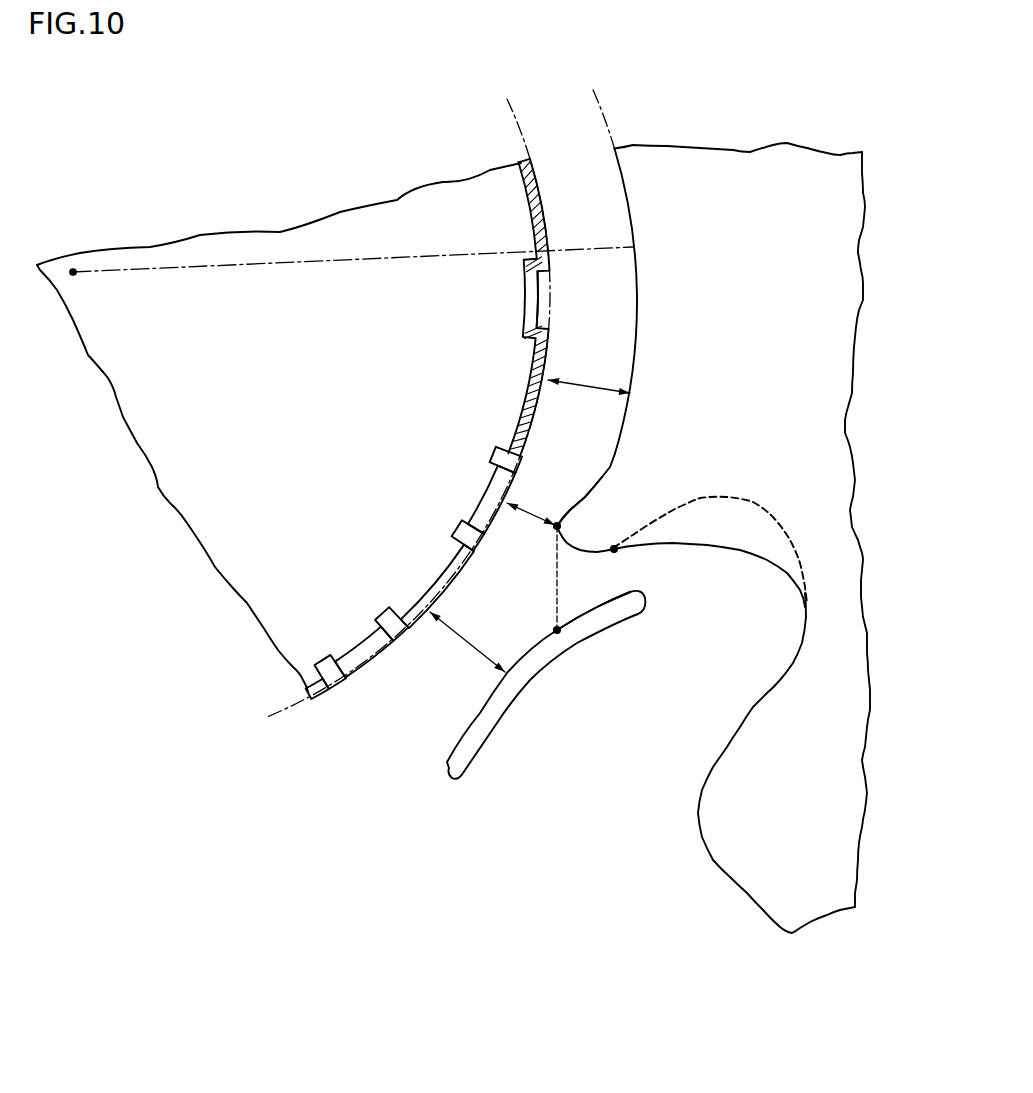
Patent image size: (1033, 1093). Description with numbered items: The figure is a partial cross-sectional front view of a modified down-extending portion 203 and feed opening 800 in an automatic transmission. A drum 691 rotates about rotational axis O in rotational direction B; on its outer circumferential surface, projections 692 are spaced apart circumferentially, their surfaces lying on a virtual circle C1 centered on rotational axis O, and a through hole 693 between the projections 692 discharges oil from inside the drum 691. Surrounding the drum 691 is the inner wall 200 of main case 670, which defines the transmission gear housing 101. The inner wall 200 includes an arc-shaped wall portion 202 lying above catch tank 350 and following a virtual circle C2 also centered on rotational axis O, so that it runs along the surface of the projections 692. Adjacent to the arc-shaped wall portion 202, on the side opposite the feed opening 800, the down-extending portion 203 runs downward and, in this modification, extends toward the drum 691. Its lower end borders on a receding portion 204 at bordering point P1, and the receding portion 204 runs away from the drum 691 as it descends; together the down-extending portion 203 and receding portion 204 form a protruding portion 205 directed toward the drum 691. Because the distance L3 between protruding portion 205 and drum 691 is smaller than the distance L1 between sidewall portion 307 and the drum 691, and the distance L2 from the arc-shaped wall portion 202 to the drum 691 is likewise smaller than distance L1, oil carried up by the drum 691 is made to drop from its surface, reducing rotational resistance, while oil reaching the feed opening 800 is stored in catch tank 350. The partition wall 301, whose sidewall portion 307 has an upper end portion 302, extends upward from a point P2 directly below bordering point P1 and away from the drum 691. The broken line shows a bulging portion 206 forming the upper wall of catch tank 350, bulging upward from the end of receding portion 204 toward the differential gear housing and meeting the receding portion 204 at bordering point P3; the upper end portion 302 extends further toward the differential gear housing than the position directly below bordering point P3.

The transmission gear housing 101 is at (309, 402).
The drum 691 is at (463, 195).
The projections 692 is at (547, 202).
The through hole 693 is at (527, 300).
The main case 670 is at (668, 512).
The arc-shaped wall portion 202 is at (660, 338).
The inner wall 200 is at (633, 420).
The down-extending portion 203 is at (578, 493).
The receding portion 204 is at (582, 550).
The protruding portion 205 is at (583, 460).
The bulging portion 206 is at (680, 515).
The feed opening 800 is at (552, 578).
The upper end portion 302 is at (614, 614).
The sidewall portion 307 is at (546, 685).
The partition wall 301 is at (497, 703).
The catch tank 350 is at (550, 731).
The rotational axis O is at (74, 270).
The virtual circle C1 is at (522, 113).
The virtual circle C2 is at (613, 113).
The distance L1 is at (482, 647).
The distance L2 is at (592, 383).
The distance L3 is at (538, 512).
The bordering point P1 is at (560, 525).
The point P2 is at (571, 664).
The bordering point P3 is at (616, 546).
The rotational direction B is at (440, 463).